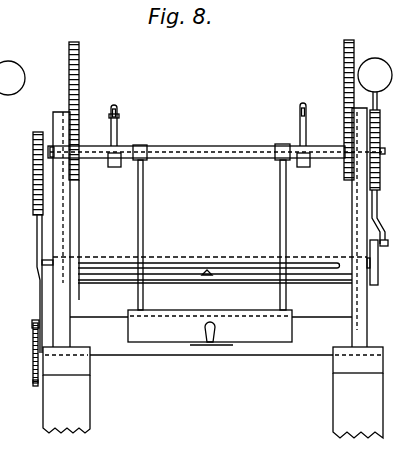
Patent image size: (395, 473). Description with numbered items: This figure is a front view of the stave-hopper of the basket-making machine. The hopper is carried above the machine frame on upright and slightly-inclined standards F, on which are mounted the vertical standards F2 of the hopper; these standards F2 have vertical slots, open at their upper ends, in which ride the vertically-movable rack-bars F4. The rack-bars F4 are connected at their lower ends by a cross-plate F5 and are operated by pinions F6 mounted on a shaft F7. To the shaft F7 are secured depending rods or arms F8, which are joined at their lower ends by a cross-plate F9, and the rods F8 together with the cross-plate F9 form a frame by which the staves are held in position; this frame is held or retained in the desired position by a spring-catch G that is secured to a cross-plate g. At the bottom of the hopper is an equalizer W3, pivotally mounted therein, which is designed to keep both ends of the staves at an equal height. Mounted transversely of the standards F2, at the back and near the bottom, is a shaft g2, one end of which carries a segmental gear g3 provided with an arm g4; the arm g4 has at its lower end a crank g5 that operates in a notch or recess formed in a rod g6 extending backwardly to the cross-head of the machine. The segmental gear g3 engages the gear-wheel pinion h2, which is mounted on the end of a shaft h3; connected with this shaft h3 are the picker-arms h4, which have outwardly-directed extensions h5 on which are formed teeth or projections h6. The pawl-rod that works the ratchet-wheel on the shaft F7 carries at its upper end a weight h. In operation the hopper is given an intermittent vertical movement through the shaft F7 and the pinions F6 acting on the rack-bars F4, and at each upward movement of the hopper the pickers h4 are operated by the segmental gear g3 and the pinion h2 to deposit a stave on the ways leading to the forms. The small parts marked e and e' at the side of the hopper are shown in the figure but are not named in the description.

The weight h is at (196, 84).
The rack-bars F4 is at (374, 44).
The vertical standards F2 is at (68, 302).
The standards F is at (83, 397).
The cross-plate g is at (211, 342).
The shaft F7 is at (205, 149).
The picker-arms h4 is at (118, 136).
The outwardly-directed extensions h5 is at (118, 109).
The teeth or projections h6 is at (110, 114).
The pinions F6 is at (79, 170).
The depending rods or arms F8 is at (143, 207).
The shaft h3 is at (220, 180).
The equalizer W3 is at (227, 268).
The cross-plate F5 is at (304, 284).
The cross-plate F9 is at (260, 333).
The spring-catch G is at (207, 340).
The rack rod e is at (382, 178).
The plate e' is at (380, 263).
The gear-wheel pinion h2 is at (36, 133).
The segmental gear g3 is at (38, 227).
The shaft g2 is at (48, 263).
The arm g4 is at (36, 315).
The crank g5 is at (33, 352).
The rod g6 is at (35, 388).